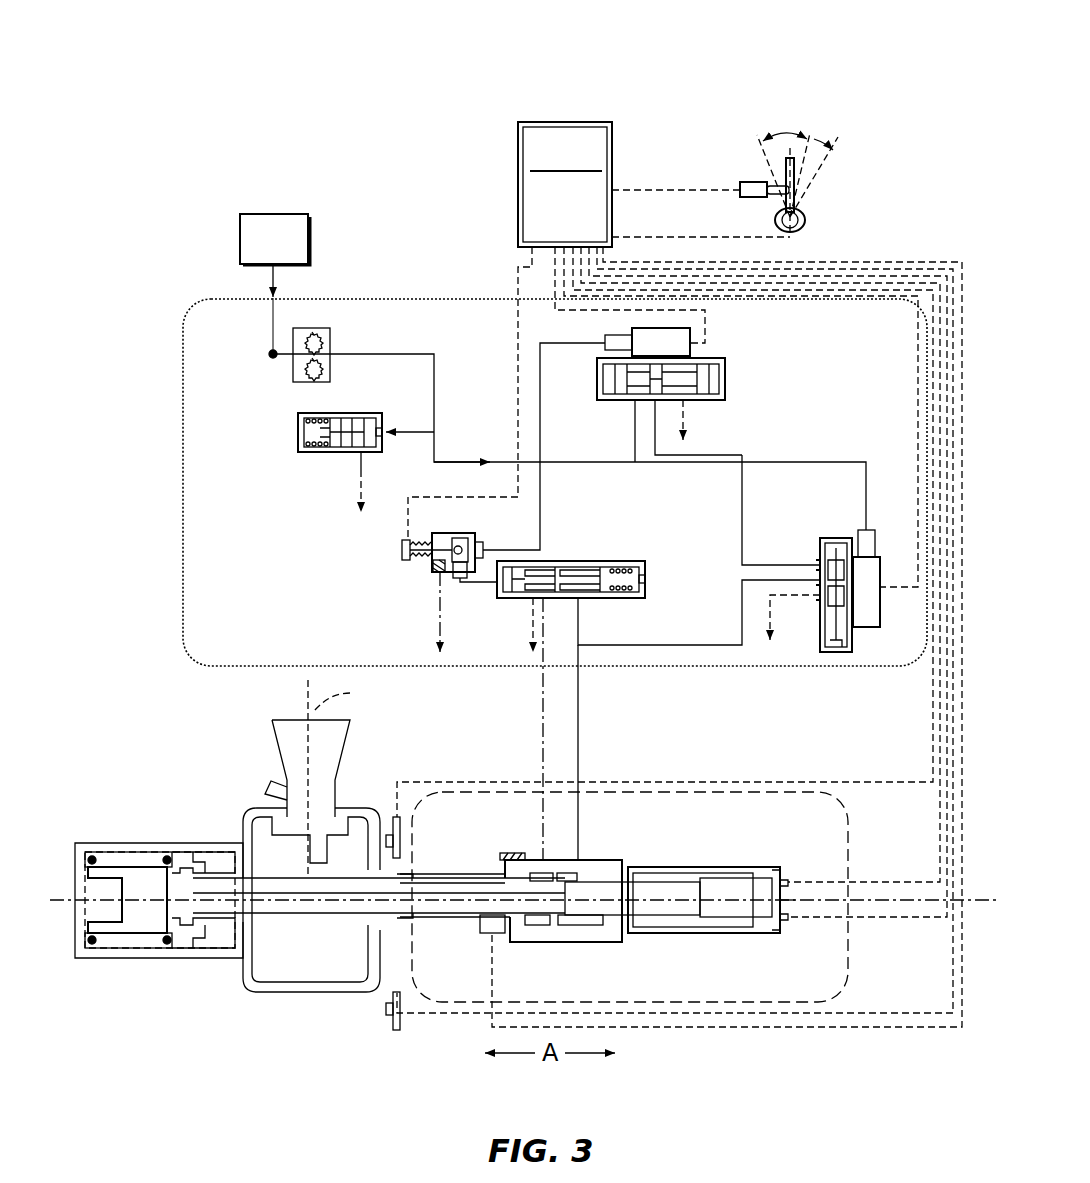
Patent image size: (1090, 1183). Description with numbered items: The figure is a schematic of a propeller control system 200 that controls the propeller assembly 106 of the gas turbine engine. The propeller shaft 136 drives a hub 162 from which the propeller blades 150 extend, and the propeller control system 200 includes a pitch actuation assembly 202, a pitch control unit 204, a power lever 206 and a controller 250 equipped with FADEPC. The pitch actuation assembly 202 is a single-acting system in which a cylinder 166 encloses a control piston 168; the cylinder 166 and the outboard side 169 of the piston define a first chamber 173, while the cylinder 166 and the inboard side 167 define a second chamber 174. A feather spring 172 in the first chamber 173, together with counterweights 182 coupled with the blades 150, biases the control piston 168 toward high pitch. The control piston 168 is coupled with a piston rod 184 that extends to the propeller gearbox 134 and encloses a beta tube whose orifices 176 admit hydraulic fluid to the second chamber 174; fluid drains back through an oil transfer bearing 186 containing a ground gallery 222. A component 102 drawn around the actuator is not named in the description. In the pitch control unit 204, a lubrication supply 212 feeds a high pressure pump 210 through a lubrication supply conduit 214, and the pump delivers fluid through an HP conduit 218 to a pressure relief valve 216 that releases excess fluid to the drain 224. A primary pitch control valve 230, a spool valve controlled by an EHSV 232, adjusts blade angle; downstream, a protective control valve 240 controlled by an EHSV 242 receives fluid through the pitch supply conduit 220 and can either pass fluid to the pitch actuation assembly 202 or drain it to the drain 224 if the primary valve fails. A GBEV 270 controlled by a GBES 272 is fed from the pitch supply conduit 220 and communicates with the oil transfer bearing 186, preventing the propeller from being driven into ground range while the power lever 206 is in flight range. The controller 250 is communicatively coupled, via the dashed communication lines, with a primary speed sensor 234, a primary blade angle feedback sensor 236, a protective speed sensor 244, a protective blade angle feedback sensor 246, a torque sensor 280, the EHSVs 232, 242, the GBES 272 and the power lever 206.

The propeller control system 200 is at (176, 100).
The controller 250 is at (518, 172).
The power lever 206 is at (828, 193).
The lubrication supply 212 is at (291, 253).
The lubrication supply conduit 214 is at (272, 343).
The high pressure pump 210 is at (292, 375).
The HP conduit 218 is at (411, 353).
The pressure relief valve 216 is at (300, 456).
The drain 224 is at (352, 470).
The pitch control unit 204 is at (139, 501).
The electrohydraulic servovalve 232 is at (692, 354).
The primary pitch control valve 230 is at (744, 379).
The ground beta enable solenoid 272 is at (389, 578).
The GBEV 270 is at (628, 609).
The pitch supply conduit 220 is at (742, 523).
The protective control valve 240 is at (845, 659).
The electrohydraulic servovalve 242 is at (867, 628).
The pitch actuation assembly 202 is at (118, 742).
The propeller blades 150 is at (337, 780).
The counterweights 182 is at (270, 788).
The propeller gearbox 134 is at (729, 783).
The protective speed sensor 244 is at (400, 815).
The primary speed sensor 234 is at (391, 1018).
The hub 162 is at (328, 993).
The propeller hub 102 is at (60, 898).
The cylinder 166 is at (100, 852).
The control piston 168 is at (183, 947).
The feather spring 172 is at (101, 948).
The outboard side 169 is at (159, 928).
The first chamber 173 is at (146, 883).
The inboard side 167 is at (198, 931).
The second chamber 174 is at (213, 869).
The orifices 176 is at (193, 887).
The piston rod 184 is at (452, 911).
The propeller shaft 136 is at (398, 919).
The oil transfer bearing 186 is at (598, 857).
The ground gallery 222 is at (528, 879).
The primary blade angle feedback sensor 236 is at (798, 931).
The protective blade angle feedback sensor 246 is at (789, 865).
The torque sensor 280 is at (497, 934).
The propeller assembly 106 is at (211, 1054).